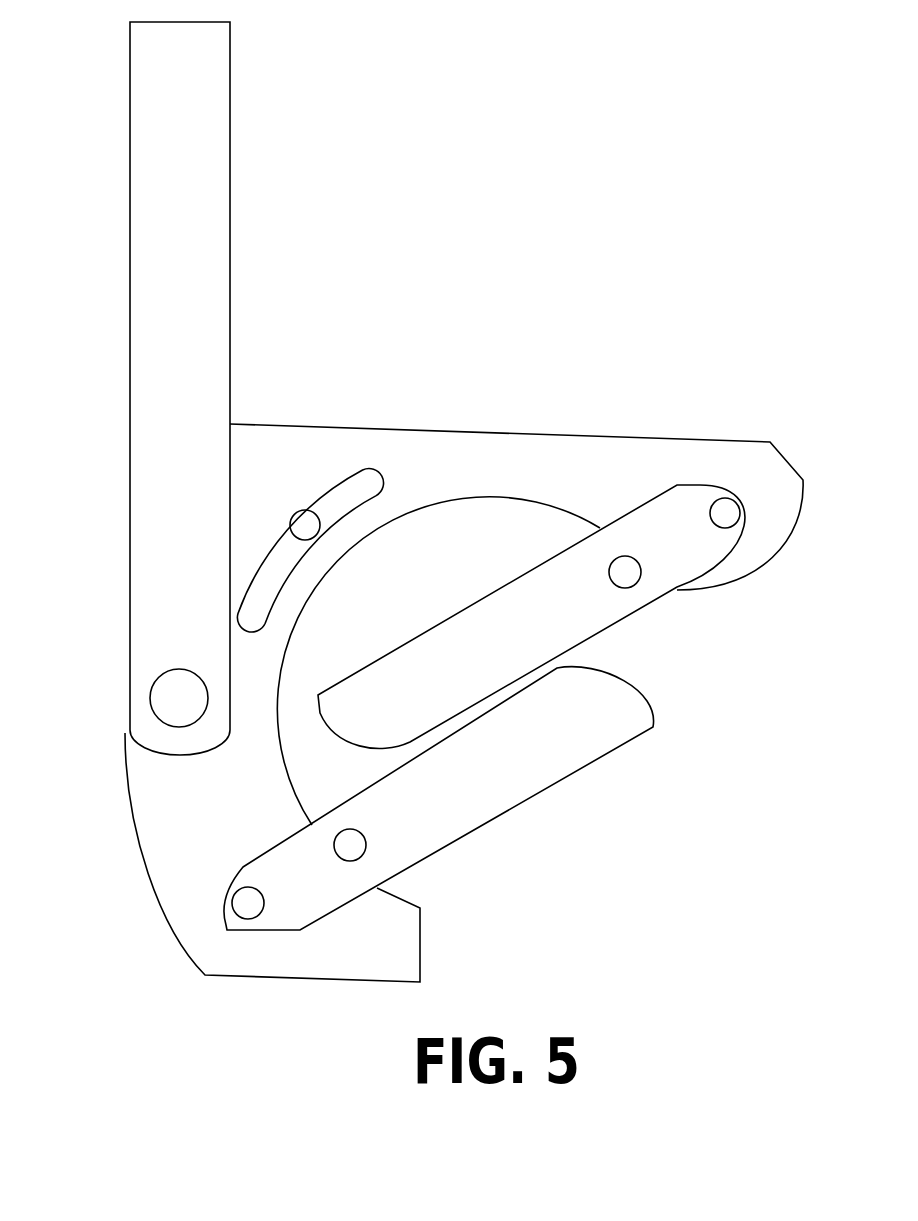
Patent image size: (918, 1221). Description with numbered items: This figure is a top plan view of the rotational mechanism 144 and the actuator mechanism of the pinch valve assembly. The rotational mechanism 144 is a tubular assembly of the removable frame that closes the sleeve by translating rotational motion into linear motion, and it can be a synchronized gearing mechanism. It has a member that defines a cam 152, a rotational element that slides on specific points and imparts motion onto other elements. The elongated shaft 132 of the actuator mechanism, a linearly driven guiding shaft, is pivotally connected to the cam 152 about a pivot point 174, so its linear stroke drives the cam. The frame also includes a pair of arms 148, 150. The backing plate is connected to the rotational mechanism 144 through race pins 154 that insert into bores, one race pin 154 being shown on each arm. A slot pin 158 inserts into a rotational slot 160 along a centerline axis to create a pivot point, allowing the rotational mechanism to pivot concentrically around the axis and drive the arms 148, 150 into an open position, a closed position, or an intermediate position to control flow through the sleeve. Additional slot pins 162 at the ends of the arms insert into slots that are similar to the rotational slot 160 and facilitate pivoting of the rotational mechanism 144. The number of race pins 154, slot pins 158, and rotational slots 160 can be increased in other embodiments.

The elongated shaft 132 is at (164, 262).
The rotational mechanism 144 is at (408, 258).
The arm 148 is at (610, 613).
The arm 150 is at (617, 727).
The cam 152 is at (626, 454).
The race pin 154 is at (612, 569).
The slot pin 158 is at (302, 524).
The rotational slot 160 is at (340, 483).
The slot pin 162 is at (722, 510).
The pivot point 174 is at (170, 692).